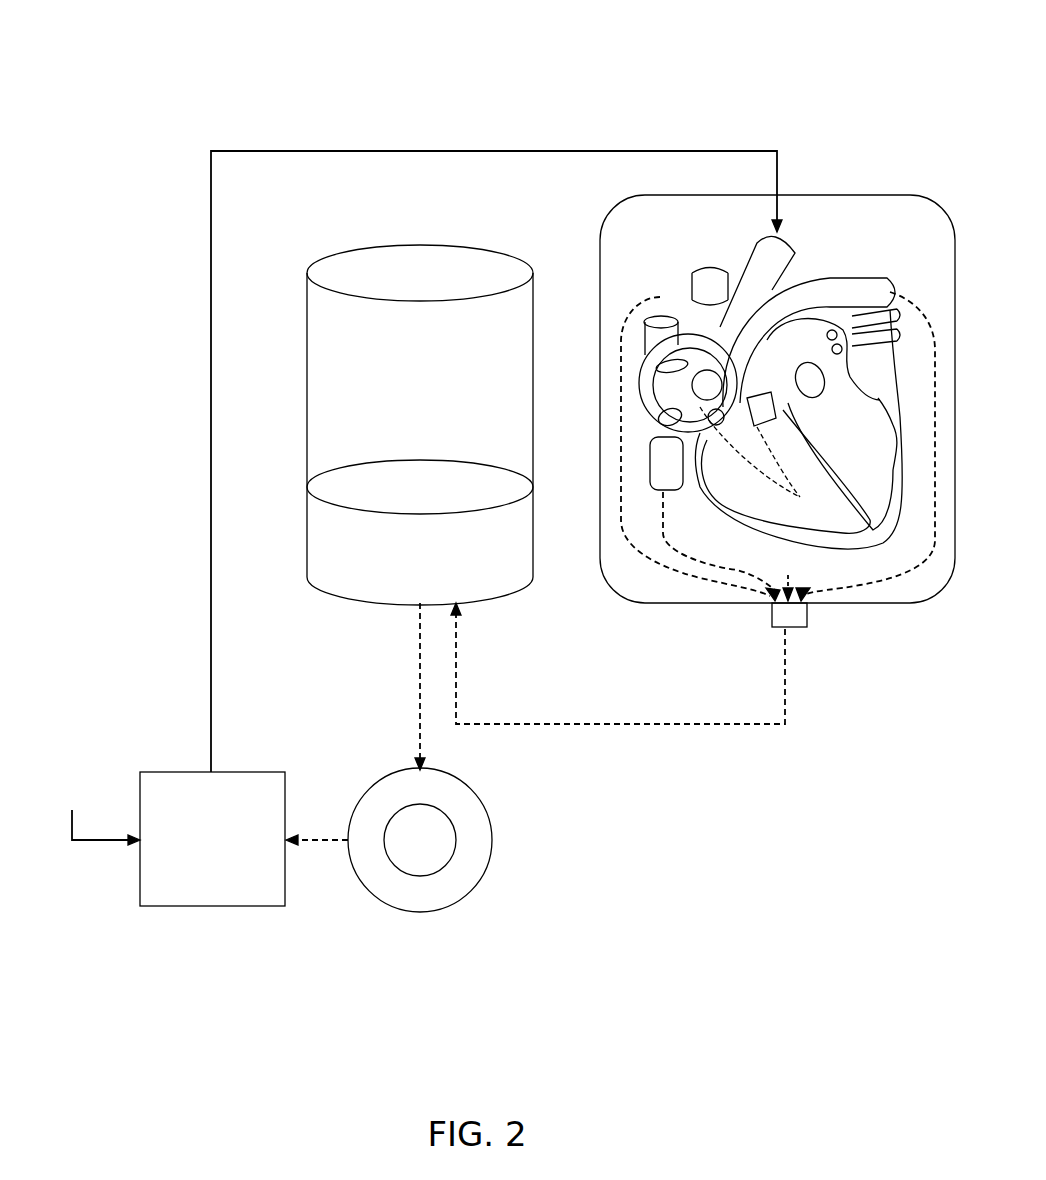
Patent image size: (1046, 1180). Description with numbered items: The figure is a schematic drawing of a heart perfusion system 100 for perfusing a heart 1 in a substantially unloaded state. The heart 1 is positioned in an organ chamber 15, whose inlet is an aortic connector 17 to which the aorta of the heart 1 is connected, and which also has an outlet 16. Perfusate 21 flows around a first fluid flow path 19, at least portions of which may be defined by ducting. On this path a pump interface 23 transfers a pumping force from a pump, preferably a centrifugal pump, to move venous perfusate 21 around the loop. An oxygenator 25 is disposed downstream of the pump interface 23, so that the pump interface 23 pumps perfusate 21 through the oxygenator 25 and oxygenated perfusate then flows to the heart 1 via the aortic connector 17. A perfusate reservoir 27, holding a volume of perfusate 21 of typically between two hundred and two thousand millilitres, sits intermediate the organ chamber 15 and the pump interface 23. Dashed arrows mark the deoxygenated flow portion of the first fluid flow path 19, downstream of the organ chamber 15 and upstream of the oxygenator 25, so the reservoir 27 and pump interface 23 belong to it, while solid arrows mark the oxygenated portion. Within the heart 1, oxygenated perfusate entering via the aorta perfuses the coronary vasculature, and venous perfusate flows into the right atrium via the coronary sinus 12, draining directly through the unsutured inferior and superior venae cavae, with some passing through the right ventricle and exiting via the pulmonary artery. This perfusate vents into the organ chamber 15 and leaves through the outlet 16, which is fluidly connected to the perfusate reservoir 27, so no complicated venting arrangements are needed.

The heart perfusion system 100 is at (340, 110).
The heart 1 is at (822, 266).
The coronary sinus 12 is at (710, 417).
The organ chamber 15 is at (891, 605).
The outlet 16 is at (810, 618).
The aortic connector 17 is at (780, 213).
The first fluid flow path 19 is at (211, 283).
The perfusate 21 is at (340, 554).
The pump interface 23 is at (460, 900).
The oxygenator 25 is at (250, 906).
The perfusate reservoir 27 is at (420, 432).